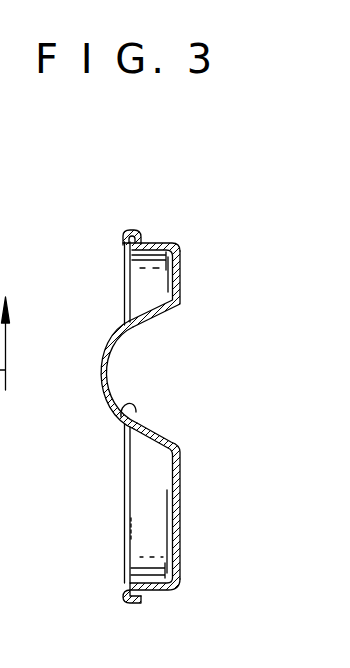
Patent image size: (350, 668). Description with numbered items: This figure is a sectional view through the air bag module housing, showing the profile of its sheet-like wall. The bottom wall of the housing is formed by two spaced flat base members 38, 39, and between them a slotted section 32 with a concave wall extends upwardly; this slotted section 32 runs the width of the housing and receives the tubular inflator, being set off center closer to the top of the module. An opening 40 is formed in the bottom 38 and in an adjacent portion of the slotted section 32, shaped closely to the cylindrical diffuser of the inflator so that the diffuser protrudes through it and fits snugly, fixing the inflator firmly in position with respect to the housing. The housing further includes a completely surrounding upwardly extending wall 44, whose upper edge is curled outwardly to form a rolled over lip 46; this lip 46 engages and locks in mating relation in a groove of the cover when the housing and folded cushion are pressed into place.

The slotted section 32 is at (114, 414).
The flat base member 38 is at (179, 565).
The flat base member 39 is at (181, 267).
The opening 40 is at (174, 463).
The upwardly extending wall 44 is at (160, 242).
The rolled over lip 46 is at (126, 236).